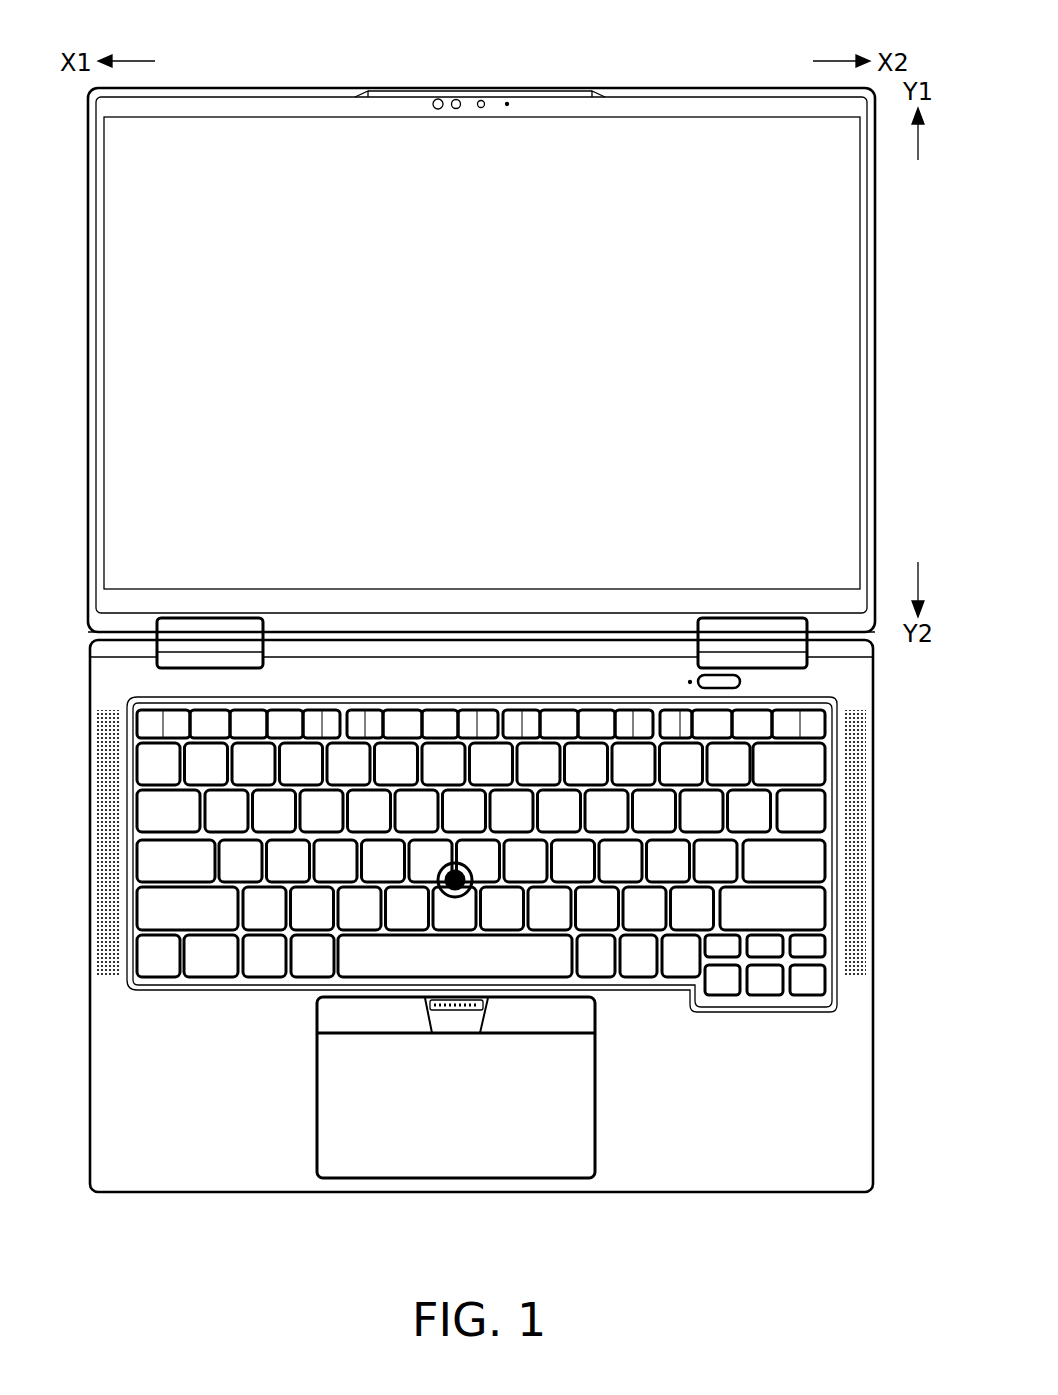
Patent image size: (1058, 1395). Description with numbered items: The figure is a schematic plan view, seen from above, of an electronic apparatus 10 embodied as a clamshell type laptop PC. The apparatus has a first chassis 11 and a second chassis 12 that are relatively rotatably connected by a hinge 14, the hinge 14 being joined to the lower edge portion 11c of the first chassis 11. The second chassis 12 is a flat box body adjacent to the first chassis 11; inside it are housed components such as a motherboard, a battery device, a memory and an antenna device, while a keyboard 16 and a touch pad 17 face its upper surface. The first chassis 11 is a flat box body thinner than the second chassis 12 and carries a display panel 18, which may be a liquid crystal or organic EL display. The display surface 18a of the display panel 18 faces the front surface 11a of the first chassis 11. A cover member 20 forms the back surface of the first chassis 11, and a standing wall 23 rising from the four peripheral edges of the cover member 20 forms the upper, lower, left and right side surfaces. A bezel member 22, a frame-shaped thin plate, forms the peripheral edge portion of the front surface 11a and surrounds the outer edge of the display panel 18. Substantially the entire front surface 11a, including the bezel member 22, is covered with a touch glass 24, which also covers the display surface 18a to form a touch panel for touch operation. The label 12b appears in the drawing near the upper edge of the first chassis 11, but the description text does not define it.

The electronic apparatus 10 is at (47, 44).
The first chassis 11 is at (203, 83).
The front surface 11a is at (444, 309).
The lower edge portion 11c is at (478, 630).
The second chassis 12 is at (217, 1202).
The upper end portion / camera portion 12b is at (447, 56).
The hinge 14 is at (215, 640).
The keyboard 16 is at (660, 996).
The touch pad 17 is at (448, 1150).
The display panel 18 is at (657, 134).
The display surface 18a is at (745, 142).
The cover member 20 is at (471, 69).
The bezel member 22 is at (265, 106).
The standing wall 23 is at (88, 259).
The touch glass 24 is at (120, 198).